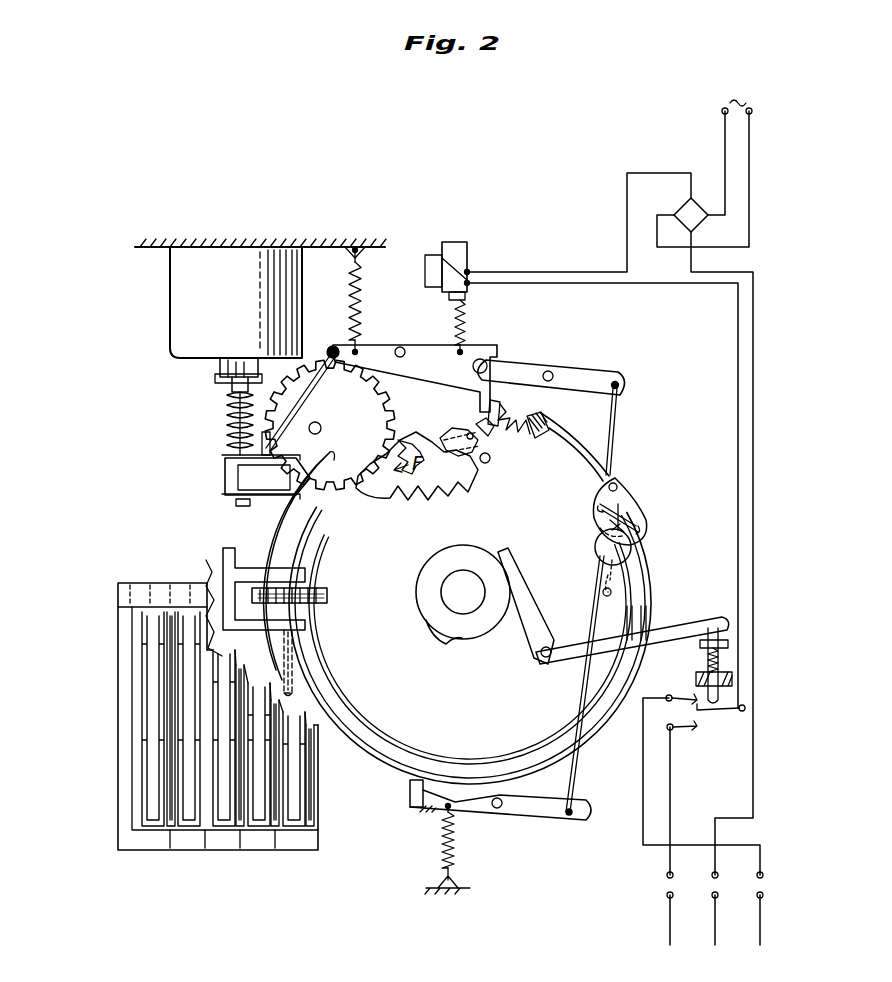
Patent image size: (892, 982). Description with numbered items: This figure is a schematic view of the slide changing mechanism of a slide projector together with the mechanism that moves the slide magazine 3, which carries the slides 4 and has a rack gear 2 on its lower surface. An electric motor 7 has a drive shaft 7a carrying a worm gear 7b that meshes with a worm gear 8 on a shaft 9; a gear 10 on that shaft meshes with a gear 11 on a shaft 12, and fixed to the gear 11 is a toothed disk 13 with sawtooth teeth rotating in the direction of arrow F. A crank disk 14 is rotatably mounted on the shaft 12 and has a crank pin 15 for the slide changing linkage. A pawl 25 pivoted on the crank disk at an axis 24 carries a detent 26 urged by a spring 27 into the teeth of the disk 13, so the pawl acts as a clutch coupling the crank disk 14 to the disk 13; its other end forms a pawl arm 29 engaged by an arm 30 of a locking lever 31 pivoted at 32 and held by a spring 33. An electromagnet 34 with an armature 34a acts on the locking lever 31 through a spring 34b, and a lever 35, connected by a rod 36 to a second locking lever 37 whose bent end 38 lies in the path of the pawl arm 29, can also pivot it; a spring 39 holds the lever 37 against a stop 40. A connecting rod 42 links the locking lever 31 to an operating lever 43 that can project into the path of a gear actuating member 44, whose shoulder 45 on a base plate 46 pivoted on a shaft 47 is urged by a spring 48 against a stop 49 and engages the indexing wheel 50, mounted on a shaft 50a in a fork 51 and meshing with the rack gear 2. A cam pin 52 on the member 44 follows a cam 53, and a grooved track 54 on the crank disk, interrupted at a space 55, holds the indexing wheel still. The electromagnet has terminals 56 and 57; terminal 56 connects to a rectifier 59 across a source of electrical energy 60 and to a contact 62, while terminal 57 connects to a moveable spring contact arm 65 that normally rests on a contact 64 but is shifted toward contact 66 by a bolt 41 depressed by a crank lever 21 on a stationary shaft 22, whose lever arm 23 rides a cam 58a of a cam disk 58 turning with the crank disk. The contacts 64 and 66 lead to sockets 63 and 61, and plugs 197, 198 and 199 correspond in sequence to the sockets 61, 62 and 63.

The rack gear 2 is at (132, 604).
The slide magazine 3 is at (182, 826).
The slides 4 is at (285, 820).
The electric motor 7 is at (188, 309).
The drive shaft 7a is at (242, 372).
The worm gear 7b is at (228, 414).
The worm gear 8 is at (264, 388).
The shaft 9 is at (321, 430).
The gear 10 is at (372, 412).
The gear 11 is at (400, 452).
The shaft 12 is at (455, 584).
The toothed disk 13 is at (405, 492).
The crank disk 14 is at (598, 690).
The crank pin 15 is at (483, 464).
The crank lever 21 is at (708, 620).
The stationary shaft 22 is at (546, 660).
The lever arm 23 is at (520, 592).
The axis 24 is at (488, 442).
The pawl 25 is at (446, 440).
The detent 26 is at (452, 470).
The spring 27 is at (548, 422).
The pawl arm 29 is at (500, 404).
The arm 30 is at (485, 398).
The locking lever 31 is at (492, 346).
The pivot 32 is at (400, 347).
The spring 33 is at (360, 294).
The electromagnet 34 is at (450, 250).
The armature 34a is at (468, 298).
The spring 34b is at (465, 320).
The lever 35 is at (573, 378).
The rod 36 is at (612, 430).
The locking lever 37 is at (534, 808).
The bent end 38 is at (412, 790).
The spring 39 is at (442, 848).
The stop 40 is at (420, 816).
The bolt 41 is at (706, 656).
The connecting rod 42 is at (295, 388).
The operating lever 43 is at (232, 478).
The gear actuating member 44 is at (630, 488).
The shoulder 45 is at (640, 520).
The base plate 46 is at (600, 520).
The shaft 47 is at (630, 500).
The spring 48 is at (632, 550).
The stop 49 is at (640, 536).
The indexing wheel 50 is at (330, 600).
The shaft 50a is at (296, 655).
The fork 51 is at (214, 578).
The cam pin 52 is at (618, 484).
The cam 53 is at (285, 508).
The grooved track 54 is at (640, 612).
The space 55 is at (640, 582).
The terminal 56 is at (468, 270).
The terminal 57 is at (468, 287).
The cam disk 58 is at (465, 552).
The cam 58a is at (446, 643).
The rectifier 59 is at (686, 208).
The source of electrical energy 60 is at (722, 110).
The contact socket 61 is at (666, 872).
The contact 62 is at (712, 872).
The contact socket 63 is at (757, 872).
The contact 64 is at (678, 692).
The moveable spring contact arm 65 is at (726, 709).
The contact 66 is at (692, 730).
The plug 197 is at (666, 895).
The plug 198 is at (711, 895).
The plug 199 is at (756, 895).